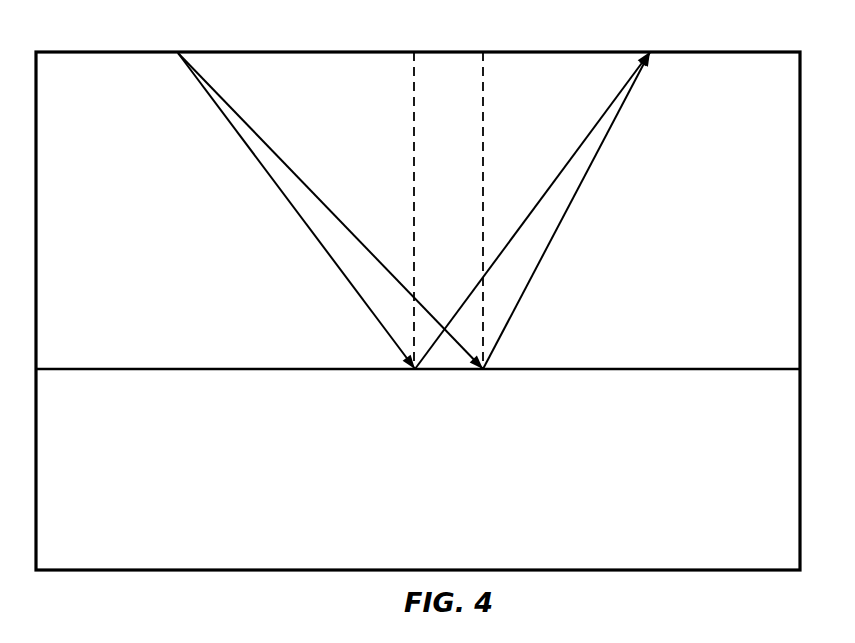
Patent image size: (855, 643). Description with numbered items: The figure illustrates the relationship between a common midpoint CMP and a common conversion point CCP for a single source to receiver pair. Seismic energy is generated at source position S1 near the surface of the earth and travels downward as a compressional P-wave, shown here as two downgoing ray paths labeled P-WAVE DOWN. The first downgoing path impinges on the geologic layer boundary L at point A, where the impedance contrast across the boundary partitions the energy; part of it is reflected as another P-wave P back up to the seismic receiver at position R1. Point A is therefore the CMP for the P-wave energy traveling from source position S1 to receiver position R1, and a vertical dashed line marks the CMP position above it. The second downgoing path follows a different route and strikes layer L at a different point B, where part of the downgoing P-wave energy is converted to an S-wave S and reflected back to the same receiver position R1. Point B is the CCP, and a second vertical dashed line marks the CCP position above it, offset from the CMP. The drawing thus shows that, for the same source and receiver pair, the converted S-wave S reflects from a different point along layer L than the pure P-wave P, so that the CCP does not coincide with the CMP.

The source position S1 is at (323, 193).
The receiver position R1 is at (648, 42).
The common midpoint CMP is at (414, 194).
The common conversion point CCP is at (482, 194).
The reflection point A is at (414, 378).
The conversion point B is at (481, 378).
The reflected P-wave P is at (549, 184).
The reflected S-wave S is at (563, 219).
The geologic layer boundary L is at (148, 366).
The downgoing P-wave P-WAVE DOWN is at (306, 188).